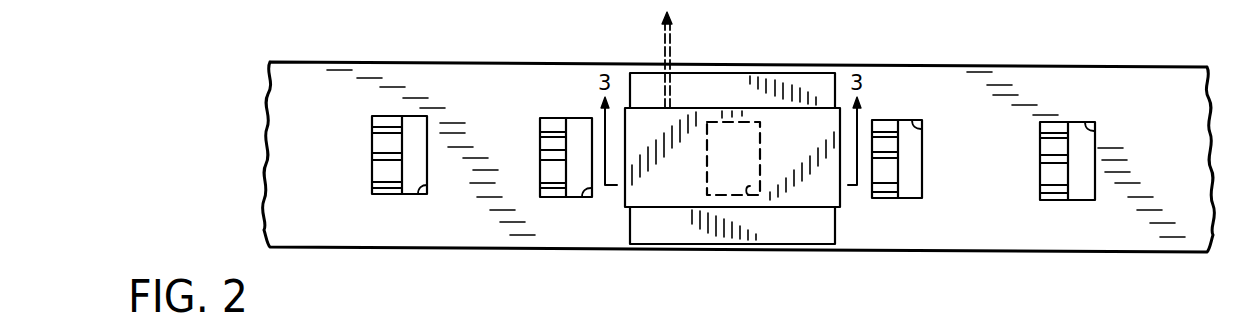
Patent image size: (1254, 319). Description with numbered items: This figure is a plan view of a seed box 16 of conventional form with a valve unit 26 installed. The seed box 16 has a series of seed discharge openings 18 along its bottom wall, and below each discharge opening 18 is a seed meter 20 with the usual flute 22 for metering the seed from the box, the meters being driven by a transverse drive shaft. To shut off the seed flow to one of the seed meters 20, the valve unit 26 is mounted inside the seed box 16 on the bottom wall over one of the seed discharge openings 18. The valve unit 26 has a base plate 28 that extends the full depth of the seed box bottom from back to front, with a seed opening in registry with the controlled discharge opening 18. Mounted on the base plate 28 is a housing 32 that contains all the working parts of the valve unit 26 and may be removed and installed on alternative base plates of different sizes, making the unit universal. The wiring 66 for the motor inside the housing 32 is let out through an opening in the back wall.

The seed box 16 is at (391, 62).
The seed discharge opening 18 is at (424, 186).
The seed meter 20 is at (553, 119).
The flute 22 is at (548, 145).
The valve unit 26 is at (715, 107).
The base plate 28 is at (797, 87).
The housing 32 is at (686, 211).
The wiring 66 is at (662, 47).